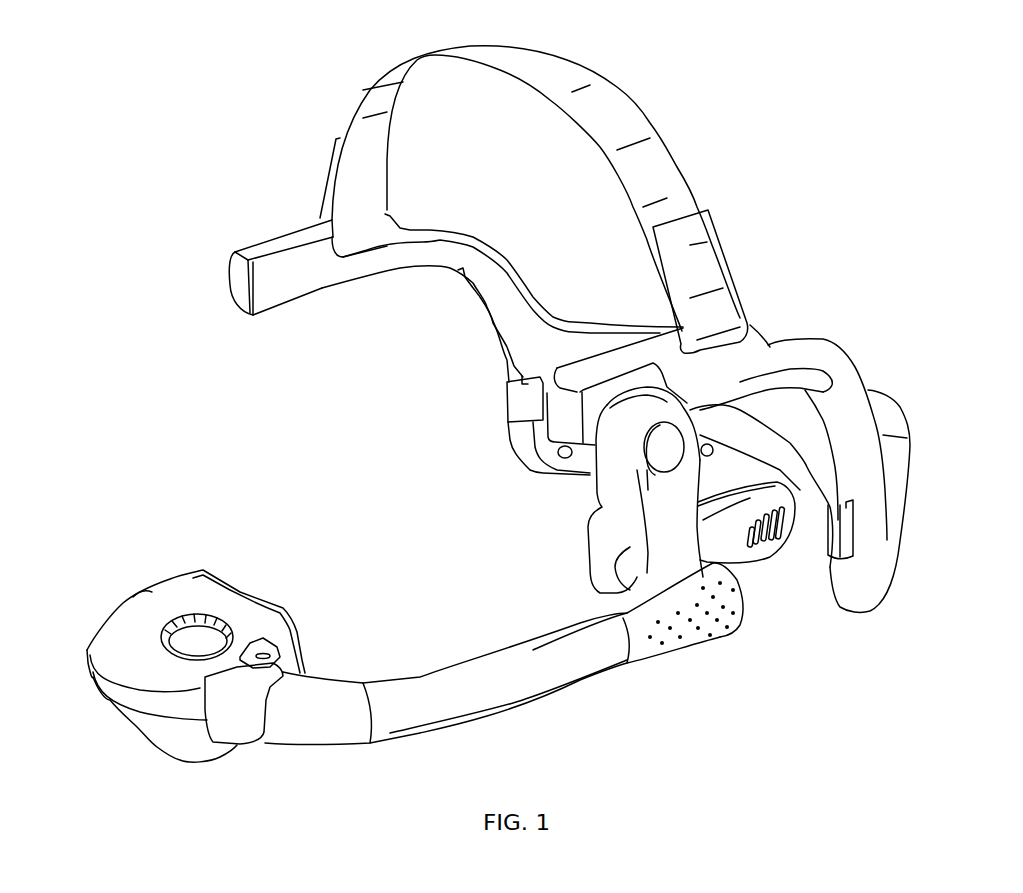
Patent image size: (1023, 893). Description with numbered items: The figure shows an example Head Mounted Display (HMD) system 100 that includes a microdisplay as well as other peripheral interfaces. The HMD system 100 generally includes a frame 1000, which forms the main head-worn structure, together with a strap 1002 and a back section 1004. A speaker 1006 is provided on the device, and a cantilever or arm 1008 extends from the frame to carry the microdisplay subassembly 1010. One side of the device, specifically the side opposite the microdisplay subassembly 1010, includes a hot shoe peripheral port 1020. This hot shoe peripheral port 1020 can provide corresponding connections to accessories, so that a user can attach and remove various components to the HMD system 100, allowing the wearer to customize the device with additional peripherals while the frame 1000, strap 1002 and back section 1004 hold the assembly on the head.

The Head Mounted Display (HMD) system 100 is at (213, 91).
The frame 1000 is at (280, 307).
The strap 1002 is at (643, 112).
The back section 1004 is at (910, 487).
The speaker 1006 is at (763, 563).
The cantilever or arm 1008 is at (530, 697).
The microdisplay subassembly 1010 is at (220, 573).
The hot shoe peripheral port 1020 is at (238, 283).